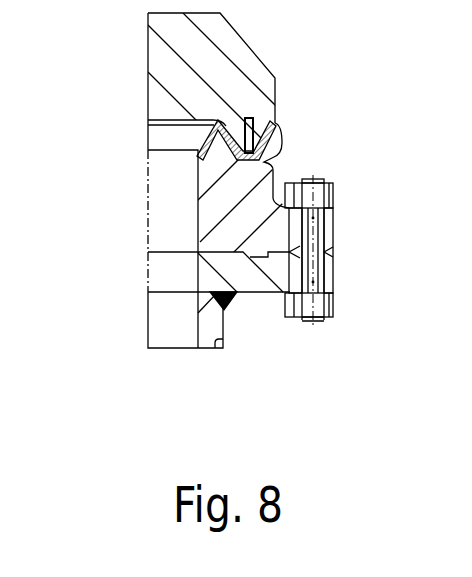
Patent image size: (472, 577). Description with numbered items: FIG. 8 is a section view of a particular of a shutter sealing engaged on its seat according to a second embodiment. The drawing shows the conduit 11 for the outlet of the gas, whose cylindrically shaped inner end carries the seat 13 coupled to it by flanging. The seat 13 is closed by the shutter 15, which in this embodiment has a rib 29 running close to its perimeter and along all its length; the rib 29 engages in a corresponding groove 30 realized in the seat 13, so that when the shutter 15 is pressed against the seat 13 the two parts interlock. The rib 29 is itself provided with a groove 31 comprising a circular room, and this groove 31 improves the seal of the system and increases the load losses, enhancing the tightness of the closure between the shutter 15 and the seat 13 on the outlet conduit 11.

The conduit 11 is at (213, 333).
The seat 13 is at (205, 232).
The shutter 15 is at (153, 46).
The rib 29 is at (273, 122).
The groove 30 is at (214, 154).
The groove 31 is at (250, 119).